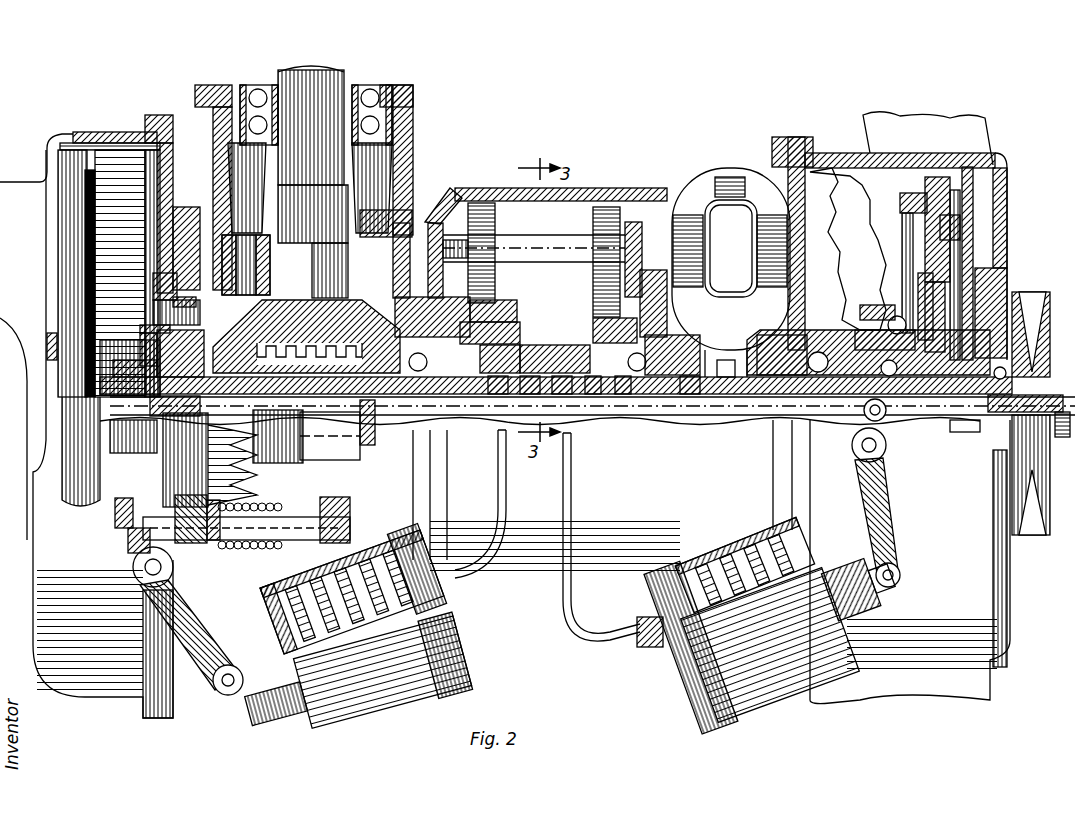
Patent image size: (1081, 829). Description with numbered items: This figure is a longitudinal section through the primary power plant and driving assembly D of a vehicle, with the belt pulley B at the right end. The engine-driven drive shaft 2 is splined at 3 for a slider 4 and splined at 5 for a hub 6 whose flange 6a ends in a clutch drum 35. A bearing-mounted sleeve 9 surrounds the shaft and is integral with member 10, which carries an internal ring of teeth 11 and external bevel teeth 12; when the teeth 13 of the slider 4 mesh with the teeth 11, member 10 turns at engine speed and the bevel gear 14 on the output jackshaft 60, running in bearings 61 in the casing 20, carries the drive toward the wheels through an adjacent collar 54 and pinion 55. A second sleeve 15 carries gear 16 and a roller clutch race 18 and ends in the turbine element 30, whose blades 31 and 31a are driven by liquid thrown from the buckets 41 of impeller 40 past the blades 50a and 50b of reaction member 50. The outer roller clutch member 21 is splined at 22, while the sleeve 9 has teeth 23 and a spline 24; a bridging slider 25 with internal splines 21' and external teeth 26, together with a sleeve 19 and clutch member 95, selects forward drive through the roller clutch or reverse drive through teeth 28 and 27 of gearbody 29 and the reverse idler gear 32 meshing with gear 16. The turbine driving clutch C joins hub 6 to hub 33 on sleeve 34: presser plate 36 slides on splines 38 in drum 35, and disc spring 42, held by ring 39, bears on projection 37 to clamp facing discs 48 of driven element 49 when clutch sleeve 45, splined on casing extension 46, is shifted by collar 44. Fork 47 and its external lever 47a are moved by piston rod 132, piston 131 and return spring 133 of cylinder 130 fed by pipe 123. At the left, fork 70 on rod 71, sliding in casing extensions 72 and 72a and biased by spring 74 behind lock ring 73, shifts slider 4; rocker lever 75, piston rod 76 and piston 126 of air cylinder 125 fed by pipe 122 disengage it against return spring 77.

The clutch D is at (150, 333).
The drive shaft 2 is at (330, 455).
The spline 3 is at (120, 368).
The slider 4 is at (140, 340).
The spline 5 is at (1010, 412).
The hub 6 is at (992, 400).
The flange 6a is at (970, 300).
The sleeve 9 is at (374, 420).
The member 10 is at (130, 536).
The internal ring of teeth 11 is at (157, 313).
The external bevel teeth 12 is at (250, 458).
The teeth 13 is at (150, 345).
The bevel gear 14 is at (318, 300).
The sleeve 15 is at (690, 400).
The gear 16 is at (626, 400).
The roller clutch race 18 is at (593, 400).
The sleeve 19 is at (565, 390).
The casing 20 is at (455, 197).
The outer roller clutch member 21 is at (497, 395).
The internal splines 21' is at (500, 319).
The external spline 22 is at (532, 390).
The teeth 23 is at (470, 328).
The spline 24 is at (546, 340).
The bridging slider 25 is at (520, 300).
The external teeth 26 is at (556, 318).
The teeth 27 is at (606, 212).
The teeth 28 is at (476, 212).
The gearbody 29 is at (506, 235).
The turbine element 30 is at (680, 332).
The blades 31 is at (685, 225).
The blades 31a is at (766, 220).
The reverse idler gear 32 is at (648, 322).
The hub 33 is at (962, 400).
The sleeve 34 is at (846, 412).
The drum 35 is at (970, 180).
The presser plate 36 is at (932, 195).
The projection 37 is at (904, 255).
The splines 38 is at (956, 185).
The ring 39 is at (906, 200).
The impeller member 40 is at (800, 300).
The buckets 41 is at (766, 295).
The disc spring 42 is at (920, 290).
The collar 44 is at (860, 310).
The clutch sleeve 45 is at (896, 316).
The casing extension 46 is at (855, 340).
The fork 47 is at (882, 447).
The external lever 47a is at (916, 488).
The facing discs 48 is at (960, 226).
The driven element 49 is at (992, 280).
The reaction member 50 is at (690, 178).
The blades 50a is at (728, 185).
The blades 50b is at (712, 292).
The collar 54 is at (202, 400).
The pinion 55 is at (160, 420).
The output jackshaft 60 is at (296, 80).
The bearings 61 is at (258, 92).
The fork 70 is at (118, 510).
The rod 71 is at (134, 562).
The casing extension 72 is at (206, 542).
The casing extension 72a is at (306, 494).
The lock ring 73 is at (326, 545).
The biasing spring 74 is at (250, 545).
The rocker lever 75 is at (150, 588).
The piston rod 76 is at (298, 680).
The return spring 77 is at (280, 612).
The clutch member 95 is at (578, 310).
The pipe 122 is at (500, 562).
The pipe 123 is at (582, 640).
The air cylinder 125 is at (394, 700).
The piston 126 is at (446, 622).
The cylinder 130 is at (746, 545).
The piston 131 is at (720, 556).
The piston rod 132 is at (892, 582).
The return spring 133 is at (806, 542).
The belt pulley B is at (1040, 385).
The turbine driving clutch C is at (1000, 220).